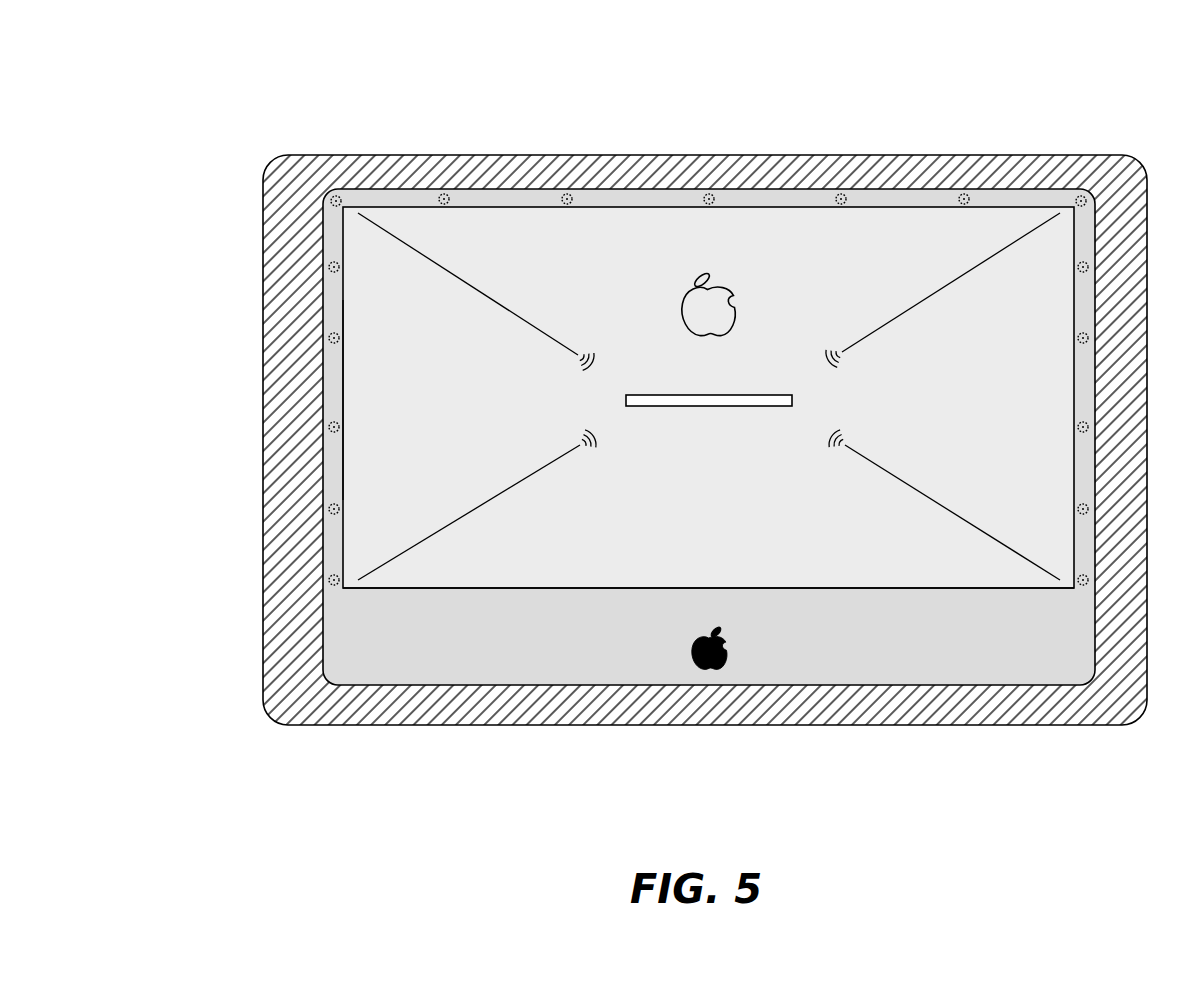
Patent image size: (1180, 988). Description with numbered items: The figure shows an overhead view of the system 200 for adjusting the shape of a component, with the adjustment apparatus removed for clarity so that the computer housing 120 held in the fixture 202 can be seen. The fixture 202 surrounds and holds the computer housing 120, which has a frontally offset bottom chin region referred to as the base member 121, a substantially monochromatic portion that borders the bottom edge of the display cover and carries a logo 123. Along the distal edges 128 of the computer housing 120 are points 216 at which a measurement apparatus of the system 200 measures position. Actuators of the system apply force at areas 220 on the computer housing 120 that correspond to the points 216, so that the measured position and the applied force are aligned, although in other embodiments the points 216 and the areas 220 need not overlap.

The system 200 is at (705, 441).
The computer housing 120 is at (658, 188).
The points 216 is at (333, 340).
The areas 220 is at (330, 345).
The distal edges 128 is at (335, 450).
The base member 121 is at (708, 620).
The logo 123 is at (728, 664).
The fixture 202 is at (535, 725).